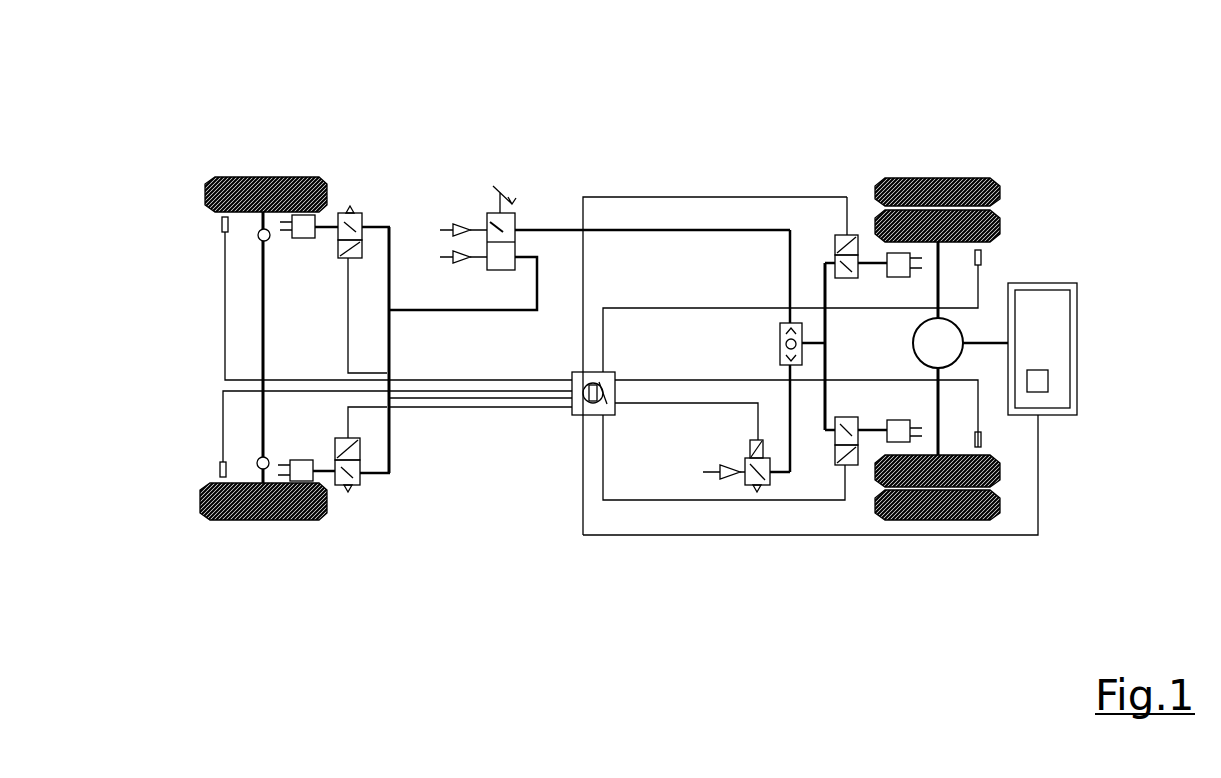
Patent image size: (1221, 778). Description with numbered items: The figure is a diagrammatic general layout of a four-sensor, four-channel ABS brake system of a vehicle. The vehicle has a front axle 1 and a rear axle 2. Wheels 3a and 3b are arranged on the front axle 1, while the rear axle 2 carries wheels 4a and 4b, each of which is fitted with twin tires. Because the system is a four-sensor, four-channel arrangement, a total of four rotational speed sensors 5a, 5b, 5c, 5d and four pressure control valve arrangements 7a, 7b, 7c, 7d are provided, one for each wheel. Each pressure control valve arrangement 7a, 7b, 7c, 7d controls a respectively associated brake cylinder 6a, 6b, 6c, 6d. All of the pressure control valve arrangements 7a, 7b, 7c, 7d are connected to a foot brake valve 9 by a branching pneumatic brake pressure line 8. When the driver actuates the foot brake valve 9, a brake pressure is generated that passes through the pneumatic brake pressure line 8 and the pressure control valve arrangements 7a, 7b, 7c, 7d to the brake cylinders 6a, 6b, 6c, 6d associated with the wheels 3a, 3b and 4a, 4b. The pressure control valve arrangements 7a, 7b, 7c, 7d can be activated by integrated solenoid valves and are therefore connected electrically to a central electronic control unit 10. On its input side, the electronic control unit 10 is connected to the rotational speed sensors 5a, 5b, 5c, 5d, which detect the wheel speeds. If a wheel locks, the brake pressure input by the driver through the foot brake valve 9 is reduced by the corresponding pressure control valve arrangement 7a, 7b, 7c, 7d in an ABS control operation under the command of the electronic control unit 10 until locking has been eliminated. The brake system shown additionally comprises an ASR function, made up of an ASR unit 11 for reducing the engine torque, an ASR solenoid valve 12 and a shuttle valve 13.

The front axle 1 is at (274, 140).
The rear axle 2 is at (953, 140).
The wheel 3a is at (205, 190).
The wheel 3b is at (200, 503).
The wheel 4a is at (1000, 195).
The wheel 4b is at (1000, 503).
The rotational speed sensor 5a is at (222, 226).
The rotational speed sensor 5b is at (220, 467).
The rotational speed sensor 5c is at (983, 258).
The rotational speed sensor 5d is at (983, 440).
The brake cylinder 6a is at (305, 238).
The brake cylinder 6b is at (300, 460).
The brake cylinder 6c is at (897, 277).
The brake cylinder 6d is at (898, 420).
The pressure control valve arrangement 7a is at (346, 257).
The pressure control valve arrangement 7b is at (345, 462).
The pressure control valve arrangement 7c is at (845, 278).
The pressure control valve arrangement 7d is at (845, 417).
The pneumatic brake pressure line 8 is at (683, 230).
The foot brake valve 9 is at (487, 223).
The electronic control unit 10 is at (578, 403).
The ASR unit 11 is at (1050, 352).
The ASR solenoid valve 12 is at (758, 470).
The shuttle valve 13 is at (780, 348).